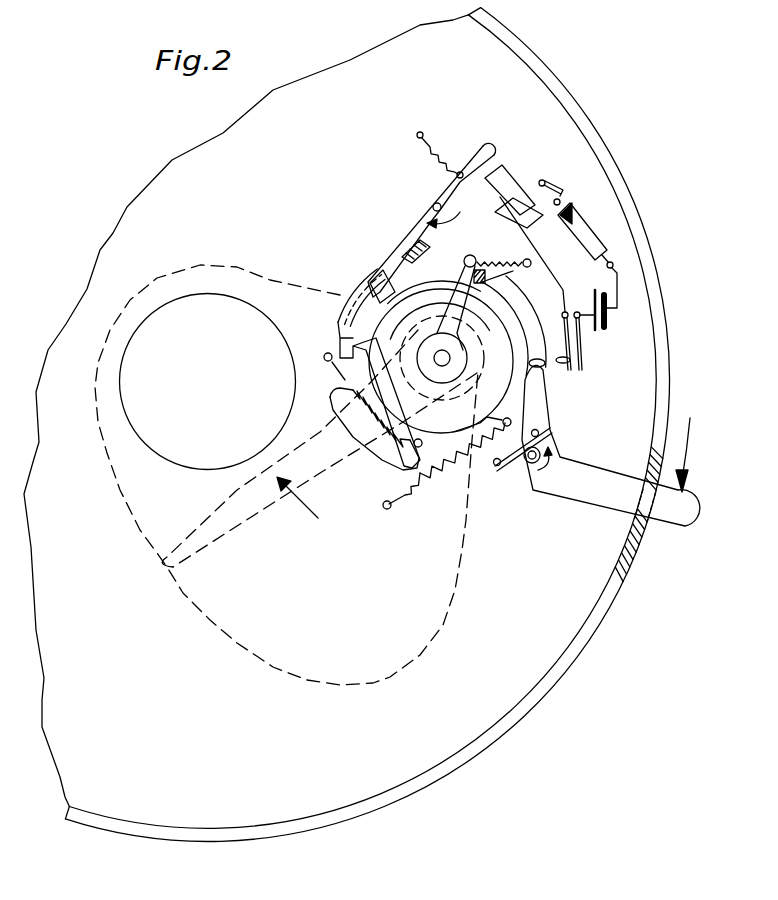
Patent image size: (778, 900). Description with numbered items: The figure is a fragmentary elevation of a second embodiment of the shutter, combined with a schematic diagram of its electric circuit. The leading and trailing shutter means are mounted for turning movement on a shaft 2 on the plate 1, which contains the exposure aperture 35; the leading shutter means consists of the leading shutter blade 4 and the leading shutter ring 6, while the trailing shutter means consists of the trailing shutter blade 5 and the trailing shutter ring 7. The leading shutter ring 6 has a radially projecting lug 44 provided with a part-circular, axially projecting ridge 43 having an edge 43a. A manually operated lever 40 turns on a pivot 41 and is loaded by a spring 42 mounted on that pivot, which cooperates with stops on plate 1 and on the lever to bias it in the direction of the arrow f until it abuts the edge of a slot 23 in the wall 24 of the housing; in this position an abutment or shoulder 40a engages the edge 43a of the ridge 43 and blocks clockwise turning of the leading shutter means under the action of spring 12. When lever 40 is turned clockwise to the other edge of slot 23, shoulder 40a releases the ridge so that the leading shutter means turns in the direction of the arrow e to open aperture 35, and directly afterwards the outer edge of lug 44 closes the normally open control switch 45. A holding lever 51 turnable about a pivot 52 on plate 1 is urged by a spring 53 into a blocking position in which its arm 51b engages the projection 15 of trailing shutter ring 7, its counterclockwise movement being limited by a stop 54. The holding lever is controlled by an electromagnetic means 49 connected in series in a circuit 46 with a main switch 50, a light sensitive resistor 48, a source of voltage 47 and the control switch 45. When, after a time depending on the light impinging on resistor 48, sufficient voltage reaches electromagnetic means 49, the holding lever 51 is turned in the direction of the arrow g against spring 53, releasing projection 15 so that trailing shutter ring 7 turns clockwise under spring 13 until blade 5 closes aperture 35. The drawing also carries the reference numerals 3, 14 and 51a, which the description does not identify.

The plate 1 is at (525, 70).
The shaft 2 is at (467, 360).
The pawl lever 3 is at (458, 315).
The leading shutter blade 4 is at (162, 280).
The trailing shutter blade 5 is at (237, 630).
The leading shutter ring 6 is at (430, 292).
The trailing shutter ring 7 is at (413, 297).
The spring 12 is at (417, 494).
The spring 13 is at (353, 387).
The stop block 14 is at (378, 273).
The projection 15 is at (357, 292).
The slot 23 is at (643, 530).
The wall 24 is at (647, 477).
The aperture 35 is at (175, 462).
The manually operated lever 40 is at (583, 497).
The abutment or shoulder 40a is at (547, 402).
The pivot 41 is at (533, 492).
The spring 42 is at (503, 475).
The ridge 43 is at (537, 260).
The edge 43a is at (553, 380).
The lug 44 is at (533, 307).
The control switch 45 is at (583, 350).
The circuit 46 is at (604, 266).
The source of voltage 47 is at (608, 323).
The light sensitive resistor 48 is at (585, 228).
The electromagnetic means 49 is at (508, 177).
The main switch 50 is at (545, 182).
The holding lever 51 is at (415, 217).
The brake lever end 51a is at (488, 143).
The arm 51b is at (388, 253).
The pivot 52 is at (435, 202).
The spring 53 is at (440, 147).
The stop 54 is at (402, 243).
The arrow e is at (297, 505).
The arrow f is at (562, 457).
The arrow g is at (453, 210).